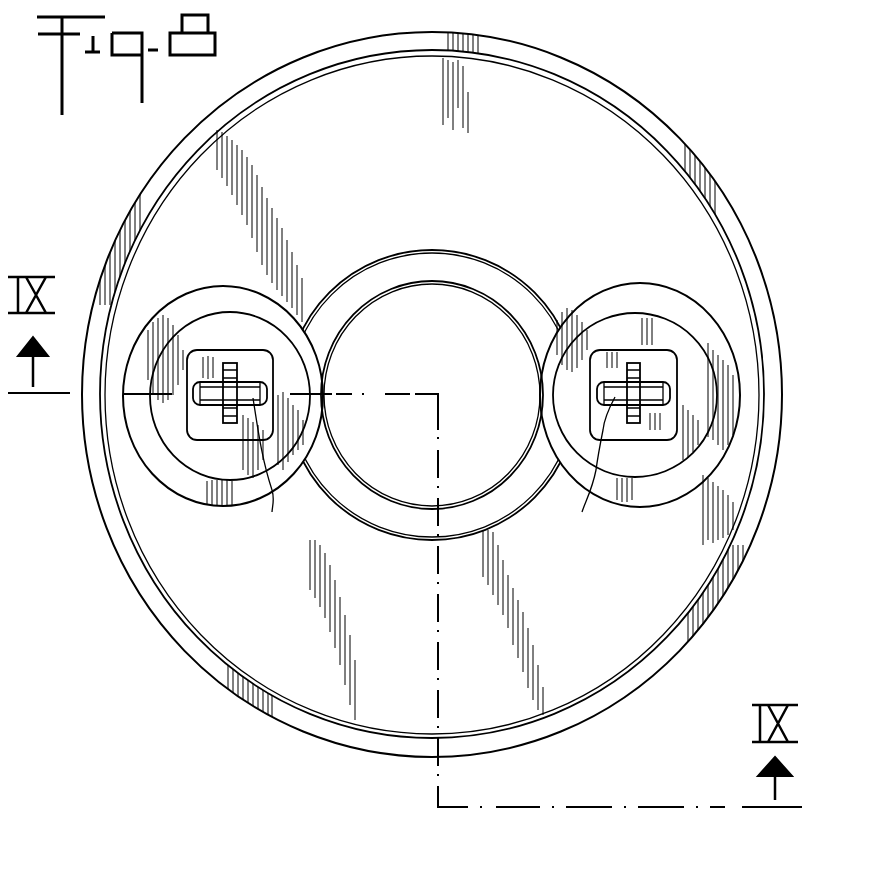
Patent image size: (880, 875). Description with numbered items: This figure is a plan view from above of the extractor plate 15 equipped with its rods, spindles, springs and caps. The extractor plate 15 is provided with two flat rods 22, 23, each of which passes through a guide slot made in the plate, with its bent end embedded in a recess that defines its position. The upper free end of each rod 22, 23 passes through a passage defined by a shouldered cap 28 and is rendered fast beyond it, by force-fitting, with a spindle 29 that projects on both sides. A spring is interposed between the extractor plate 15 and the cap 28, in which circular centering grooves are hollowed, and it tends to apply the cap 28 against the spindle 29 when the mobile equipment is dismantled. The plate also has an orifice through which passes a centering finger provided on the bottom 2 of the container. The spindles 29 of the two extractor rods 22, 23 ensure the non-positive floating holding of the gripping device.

The bottom 2 is at (432, 391).
The extractor plate 15 is at (461, 186).
The flat rod 22 is at (229, 366).
The flat rod 23 is at (633, 366).
The shouldered cap 28 is at (205, 485).
The spindle 29 is at (434, 476).